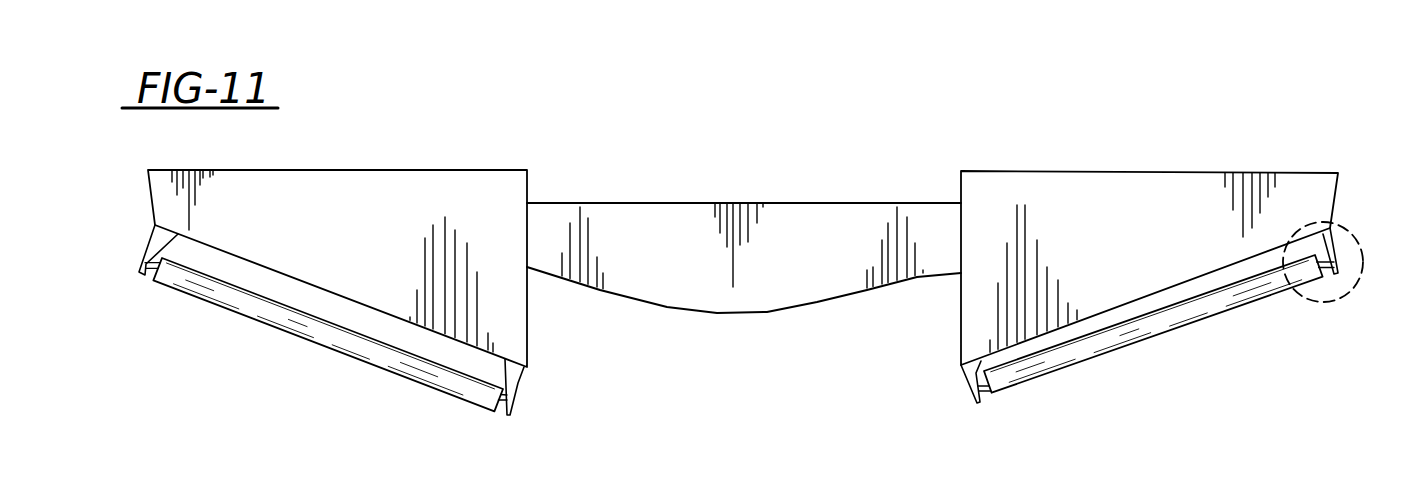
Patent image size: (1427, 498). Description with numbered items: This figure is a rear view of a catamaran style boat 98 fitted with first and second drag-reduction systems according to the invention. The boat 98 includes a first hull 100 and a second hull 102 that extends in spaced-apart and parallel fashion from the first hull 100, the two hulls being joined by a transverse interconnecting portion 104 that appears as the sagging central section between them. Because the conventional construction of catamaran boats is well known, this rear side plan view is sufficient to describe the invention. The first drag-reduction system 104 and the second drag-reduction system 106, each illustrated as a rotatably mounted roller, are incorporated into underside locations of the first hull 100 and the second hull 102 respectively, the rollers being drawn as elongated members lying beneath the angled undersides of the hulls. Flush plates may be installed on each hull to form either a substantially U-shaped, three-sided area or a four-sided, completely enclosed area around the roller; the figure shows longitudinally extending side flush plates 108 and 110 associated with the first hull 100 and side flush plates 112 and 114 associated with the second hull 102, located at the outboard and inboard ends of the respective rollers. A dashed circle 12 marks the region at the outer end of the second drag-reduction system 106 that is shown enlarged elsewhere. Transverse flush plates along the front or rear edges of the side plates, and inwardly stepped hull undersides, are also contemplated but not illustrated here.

The first hull 100 is at (404, 140).
The second hull 102 is at (1049, 132).
The catamaran style boat 98 is at (688, 162).
The first drag-reduction system 104 is at (294, 362).
The second drag-reduction system 106 is at (1165, 370).
The side flush plate 108 is at (138, 262).
The side flush plate 110 is at (519, 383).
The side flush plate 112 is at (960, 370).
The side flush plate 114 is at (1340, 270).
The detail region circle 12 is at (1323, 302).